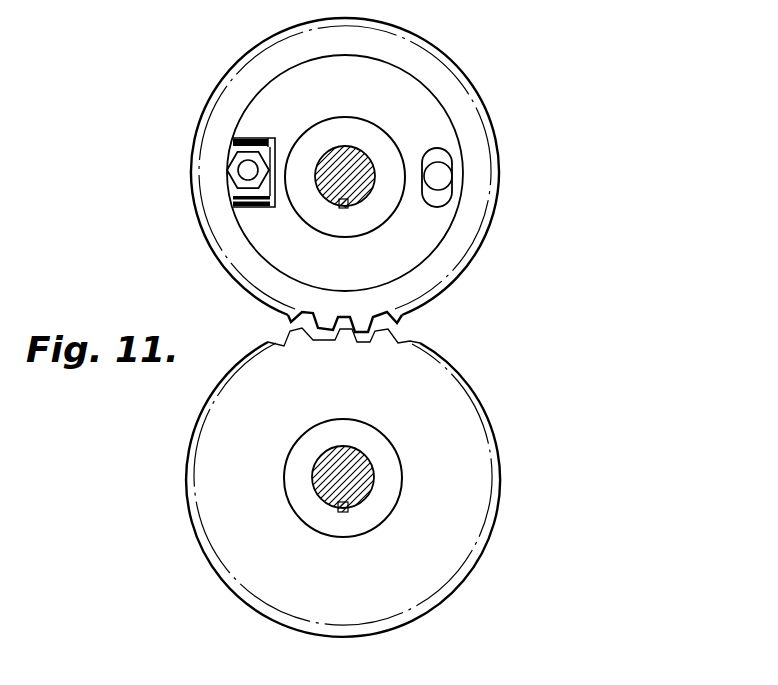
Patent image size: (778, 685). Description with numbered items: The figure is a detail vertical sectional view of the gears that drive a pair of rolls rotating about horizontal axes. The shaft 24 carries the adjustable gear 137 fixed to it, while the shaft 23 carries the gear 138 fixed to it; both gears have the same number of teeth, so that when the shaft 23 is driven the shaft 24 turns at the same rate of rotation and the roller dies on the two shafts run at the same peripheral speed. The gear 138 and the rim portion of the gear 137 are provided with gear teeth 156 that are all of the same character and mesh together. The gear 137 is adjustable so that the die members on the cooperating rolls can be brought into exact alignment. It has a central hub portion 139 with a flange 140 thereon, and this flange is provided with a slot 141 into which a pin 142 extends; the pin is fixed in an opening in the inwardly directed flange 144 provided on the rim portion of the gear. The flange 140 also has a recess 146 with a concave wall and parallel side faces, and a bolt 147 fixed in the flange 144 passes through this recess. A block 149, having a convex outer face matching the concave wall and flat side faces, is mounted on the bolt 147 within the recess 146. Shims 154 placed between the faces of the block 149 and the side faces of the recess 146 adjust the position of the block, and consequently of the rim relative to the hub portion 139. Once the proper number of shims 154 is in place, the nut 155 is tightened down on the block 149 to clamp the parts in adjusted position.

The shaft 23 is at (356, 478).
The shaft 24 is at (343, 143).
The gear 137 is at (462, 243).
The gear 138 is at (478, 501).
The central hub portion 139 is at (372, 220).
The flange 140 is at (428, 110).
The slot 141 is at (450, 151).
The pin 142 is at (440, 177).
The inwardly directed flange 144 is at (226, 242).
The recess 146 is at (274, 207).
The bolt 147 is at (243, 167).
The block 149 is at (280, 140).
The shims 154 is at (245, 142).
The nut 155 is at (230, 177).
The gear teeth 156 is at (362, 318).